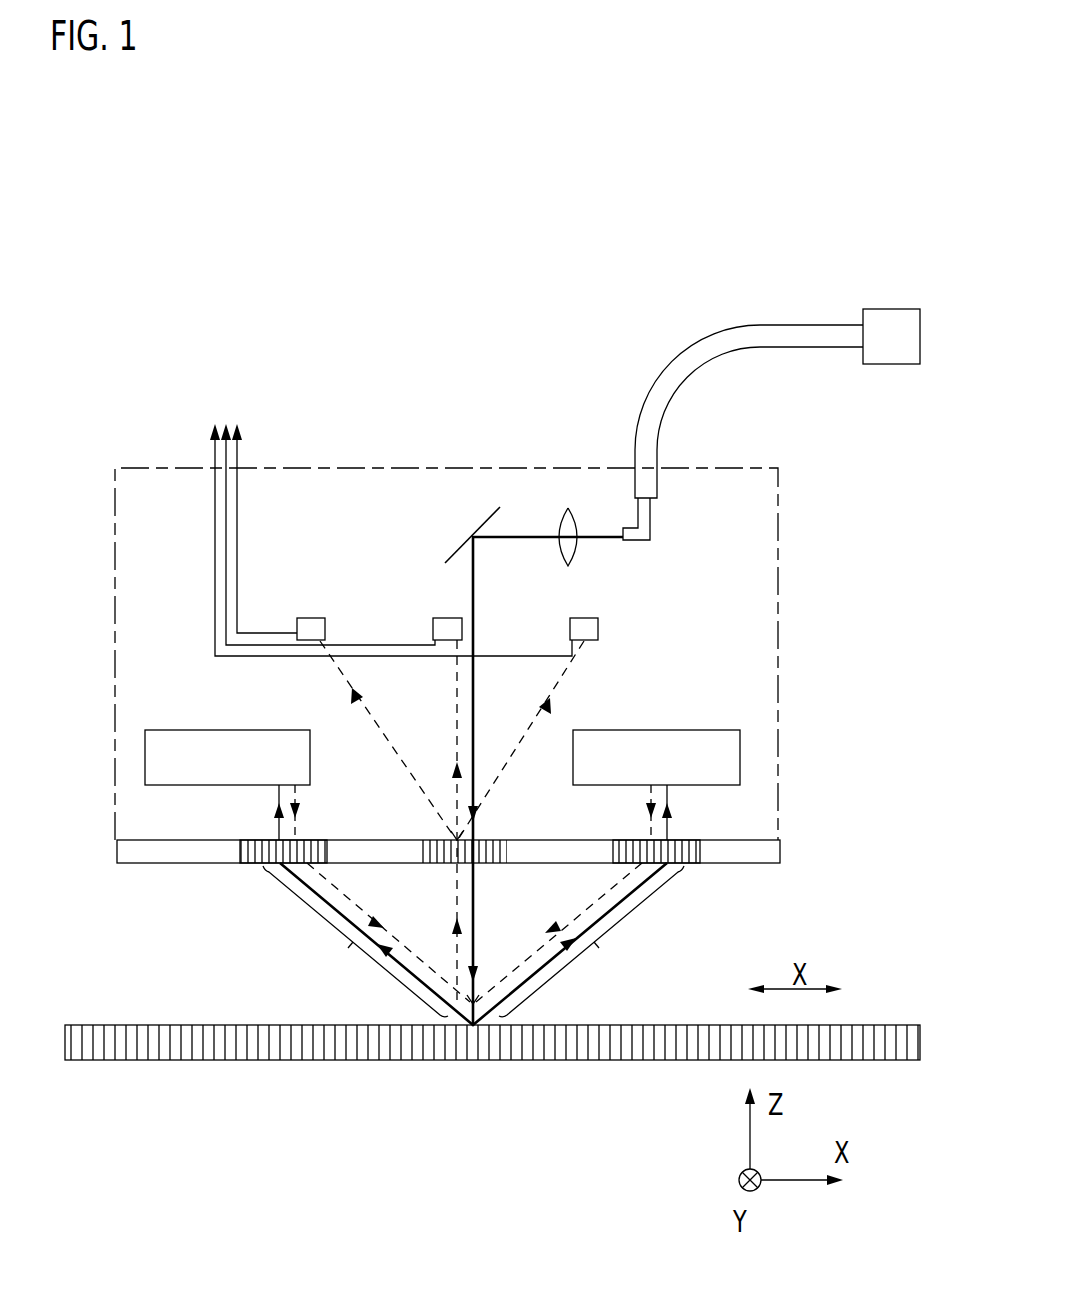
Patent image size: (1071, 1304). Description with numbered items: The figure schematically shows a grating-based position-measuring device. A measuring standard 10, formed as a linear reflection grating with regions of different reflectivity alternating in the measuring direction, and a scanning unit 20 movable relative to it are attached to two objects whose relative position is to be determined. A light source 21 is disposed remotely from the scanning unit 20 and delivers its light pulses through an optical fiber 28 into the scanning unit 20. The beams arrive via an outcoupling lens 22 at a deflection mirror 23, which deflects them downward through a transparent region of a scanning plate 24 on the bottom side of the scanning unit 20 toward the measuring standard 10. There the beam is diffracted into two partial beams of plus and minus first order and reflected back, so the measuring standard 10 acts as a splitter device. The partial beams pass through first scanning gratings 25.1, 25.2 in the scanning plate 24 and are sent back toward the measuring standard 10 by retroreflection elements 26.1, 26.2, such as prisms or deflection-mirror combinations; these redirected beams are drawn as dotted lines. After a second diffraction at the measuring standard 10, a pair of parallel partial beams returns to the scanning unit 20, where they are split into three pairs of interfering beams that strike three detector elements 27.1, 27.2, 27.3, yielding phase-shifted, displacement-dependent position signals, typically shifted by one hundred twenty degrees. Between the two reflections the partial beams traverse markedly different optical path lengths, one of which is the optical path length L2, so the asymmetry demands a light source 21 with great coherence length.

The measuring standard 10 is at (457, 1048).
The scanning unit 20 is at (142, 445).
The light source 21 is at (893, 330).
The outcoupling lens 22 is at (567, 526).
The deflection mirror 23 is at (483, 520).
The scanning plate 24 is at (757, 852).
The first scanning grating 25.1 is at (257, 852).
The first scanning grating 25.2 is at (688, 852).
The retroreflection element 26.1 is at (190, 752).
The retroreflection element 26.2 is at (706, 752).
The detector element 27.1 is at (311, 630).
The detector element 27.2 is at (448, 630).
The detector element 27.3 is at (586, 632).
The optical fiber 28 is at (714, 345).
The optical path length L2 is at (473, 941).